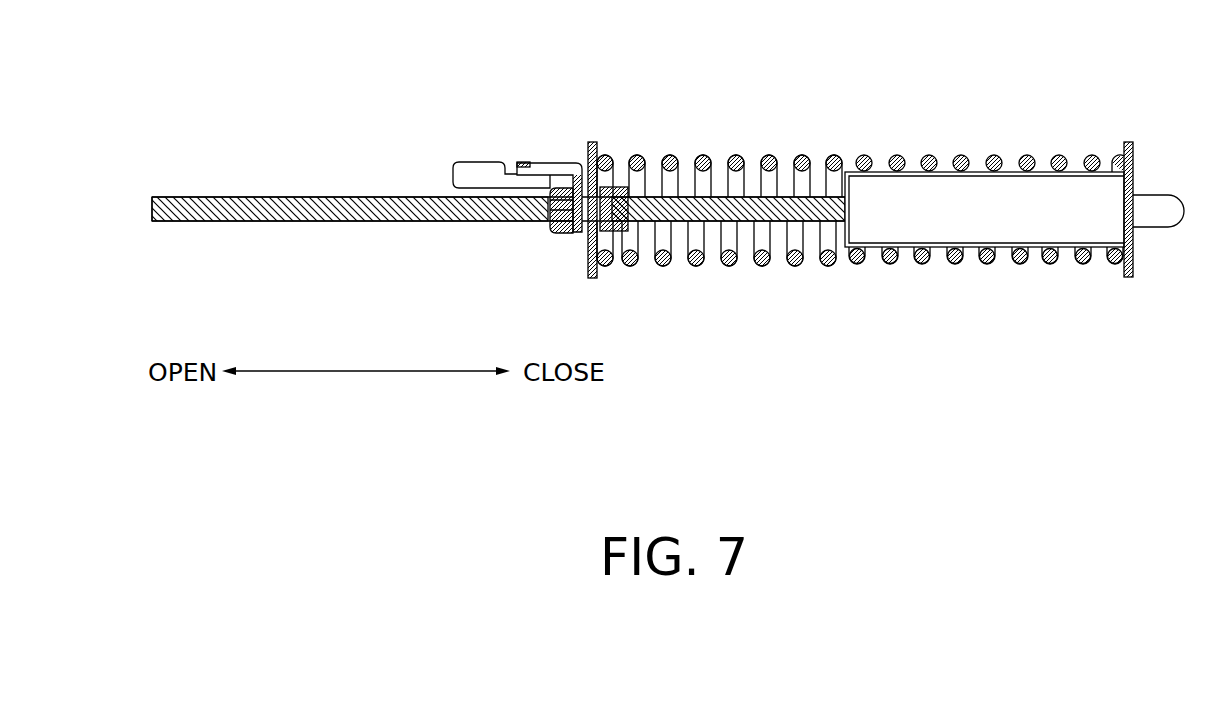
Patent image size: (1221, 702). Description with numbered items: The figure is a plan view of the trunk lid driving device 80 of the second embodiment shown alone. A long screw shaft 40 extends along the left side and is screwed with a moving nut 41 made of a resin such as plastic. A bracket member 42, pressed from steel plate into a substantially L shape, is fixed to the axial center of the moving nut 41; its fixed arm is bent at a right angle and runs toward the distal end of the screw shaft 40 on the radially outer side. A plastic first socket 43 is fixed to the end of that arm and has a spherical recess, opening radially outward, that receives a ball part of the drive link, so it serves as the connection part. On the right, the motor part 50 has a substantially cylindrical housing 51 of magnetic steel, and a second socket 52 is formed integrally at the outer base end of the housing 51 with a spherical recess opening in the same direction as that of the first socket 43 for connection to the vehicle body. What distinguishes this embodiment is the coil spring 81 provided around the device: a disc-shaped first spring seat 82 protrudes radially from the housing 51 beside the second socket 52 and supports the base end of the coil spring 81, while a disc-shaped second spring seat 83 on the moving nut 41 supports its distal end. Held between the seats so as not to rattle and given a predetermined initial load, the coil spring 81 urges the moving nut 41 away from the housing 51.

The trunk lid driving device 80 is at (330, 126).
The screw shaft 40 is at (293, 222).
The moving nut 41 is at (555, 234).
The bracket member 42 is at (557, 164).
The first socket 43 is at (483, 162).
The second spring seat 83 is at (600, 145).
The coil spring 81 is at (815, 265).
The motor part 50 is at (1041, 166).
The housing 51 is at (947, 213).
The first spring seat 82 is at (1125, 268).
The second socket 52 is at (1155, 212).